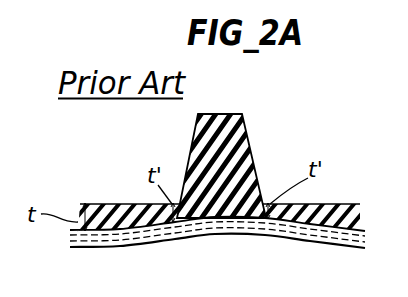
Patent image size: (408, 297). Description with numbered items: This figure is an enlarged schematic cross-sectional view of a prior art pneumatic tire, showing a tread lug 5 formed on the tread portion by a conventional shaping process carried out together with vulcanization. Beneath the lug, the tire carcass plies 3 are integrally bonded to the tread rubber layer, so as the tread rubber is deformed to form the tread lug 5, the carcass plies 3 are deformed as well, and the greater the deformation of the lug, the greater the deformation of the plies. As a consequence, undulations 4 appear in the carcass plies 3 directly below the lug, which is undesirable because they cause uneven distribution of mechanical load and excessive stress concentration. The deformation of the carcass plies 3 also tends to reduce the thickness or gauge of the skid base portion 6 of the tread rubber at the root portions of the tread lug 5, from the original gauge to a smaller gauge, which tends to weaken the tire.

The carcass plies 3 is at (185, 237).
The undulations 4 is at (250, 234).
The tread lug 5 is at (248, 147).
The skid base portion 6 is at (108, 204).